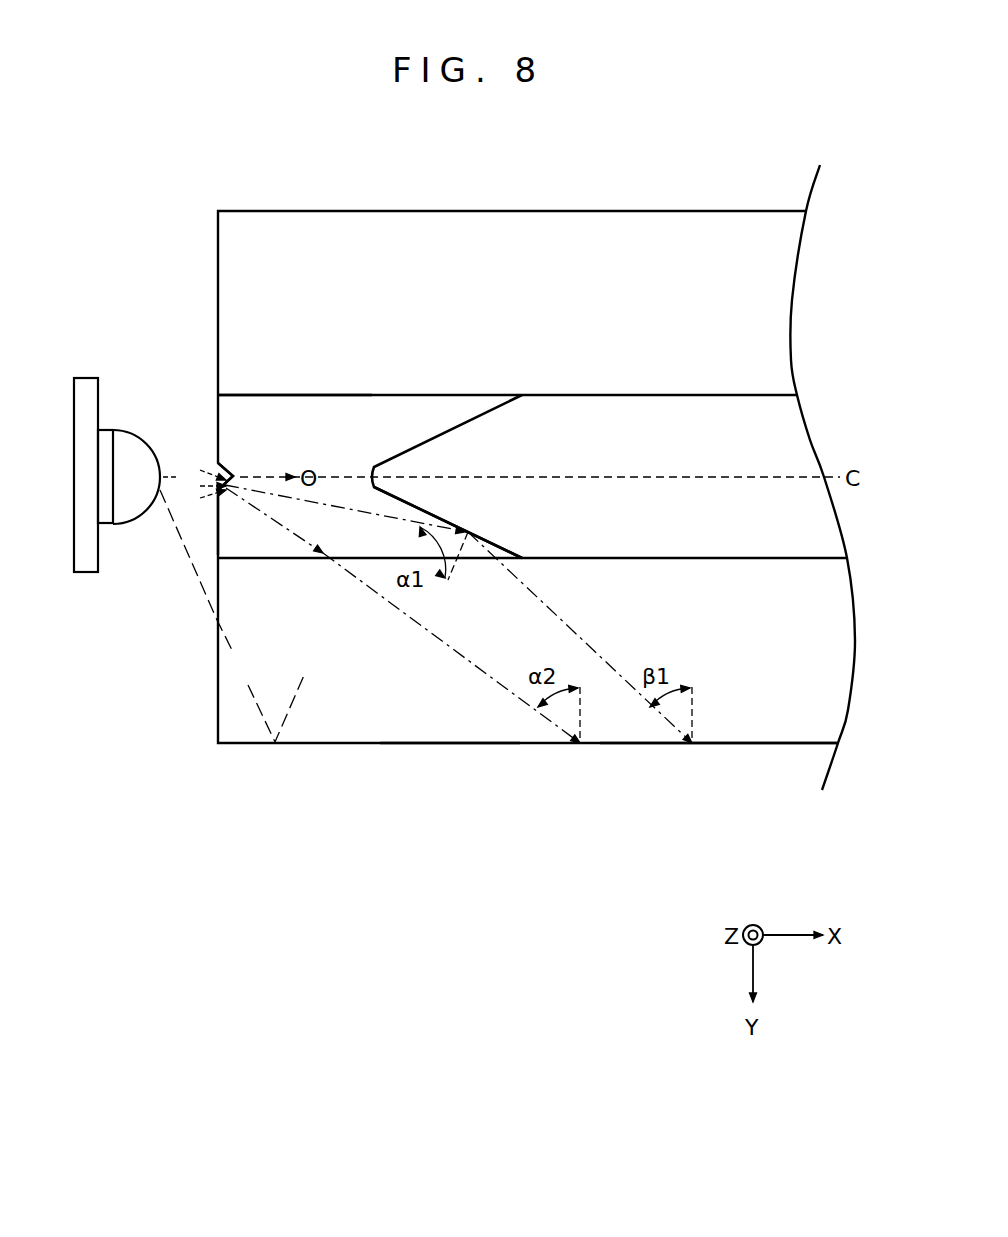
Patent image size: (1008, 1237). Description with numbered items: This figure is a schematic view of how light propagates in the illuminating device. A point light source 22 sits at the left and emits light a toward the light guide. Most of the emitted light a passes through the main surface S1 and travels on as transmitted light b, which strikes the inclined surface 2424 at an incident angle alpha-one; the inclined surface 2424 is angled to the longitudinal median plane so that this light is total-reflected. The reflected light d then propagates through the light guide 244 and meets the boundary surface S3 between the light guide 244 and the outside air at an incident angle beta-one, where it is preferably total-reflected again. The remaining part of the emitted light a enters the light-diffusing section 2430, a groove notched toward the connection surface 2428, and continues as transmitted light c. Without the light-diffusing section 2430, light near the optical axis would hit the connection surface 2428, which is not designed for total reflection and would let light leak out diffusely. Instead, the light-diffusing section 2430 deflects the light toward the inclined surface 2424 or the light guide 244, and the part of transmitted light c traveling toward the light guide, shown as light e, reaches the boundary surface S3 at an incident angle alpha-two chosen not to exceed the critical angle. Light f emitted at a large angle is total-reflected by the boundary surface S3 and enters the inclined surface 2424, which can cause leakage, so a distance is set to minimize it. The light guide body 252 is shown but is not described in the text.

The point light source 22 is at (86, 575).
The light-diffusing section 2430 is at (310, 440).
The connection surface 2428 is at (371, 468).
The inclined surface 2424 is at (432, 513).
The light guide body 252 is at (776, 544).
The light guide 244 is at (738, 752).
The main surface S1 is at (218, 512).
The boundary surface S3 is at (480, 742).
The emitted light a is at (194, 486).
The transmitted light b is at (346, 509).
The transmitted light c is at (274, 520).
The reflected light d is at (580, 637).
The light e is at (451, 648).
The light f is at (232, 616).